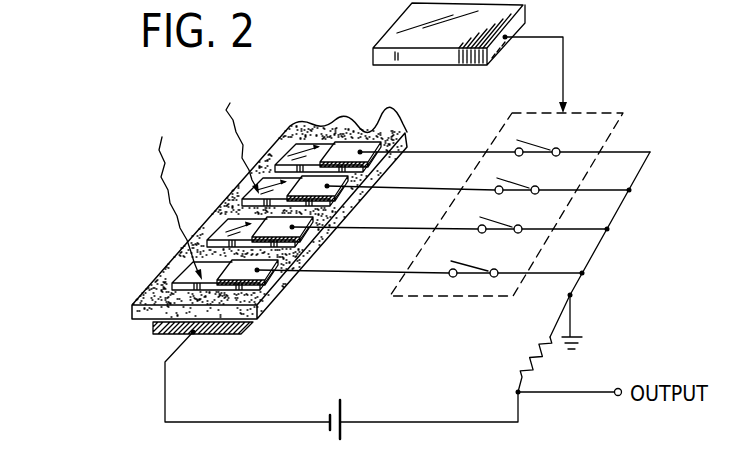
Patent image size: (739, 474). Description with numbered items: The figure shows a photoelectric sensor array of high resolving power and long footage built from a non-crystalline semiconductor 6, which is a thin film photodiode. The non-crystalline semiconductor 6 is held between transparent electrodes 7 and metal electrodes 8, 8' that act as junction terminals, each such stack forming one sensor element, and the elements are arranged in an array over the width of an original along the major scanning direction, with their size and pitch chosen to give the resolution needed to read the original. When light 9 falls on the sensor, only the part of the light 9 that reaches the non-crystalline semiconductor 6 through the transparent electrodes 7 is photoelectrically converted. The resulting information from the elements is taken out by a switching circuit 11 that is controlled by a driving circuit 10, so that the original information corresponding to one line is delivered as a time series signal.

The non-crystalline semiconductor 6 is at (132, 308).
The transparent electrode 7 is at (185, 275).
The metal electrode 8 is at (261, 288).
The metal electrode 8' is at (180, 339).
The light 9 is at (163, 170).
The driving circuit 10 is at (432, 57).
The switching circuit 11 is at (593, 120).